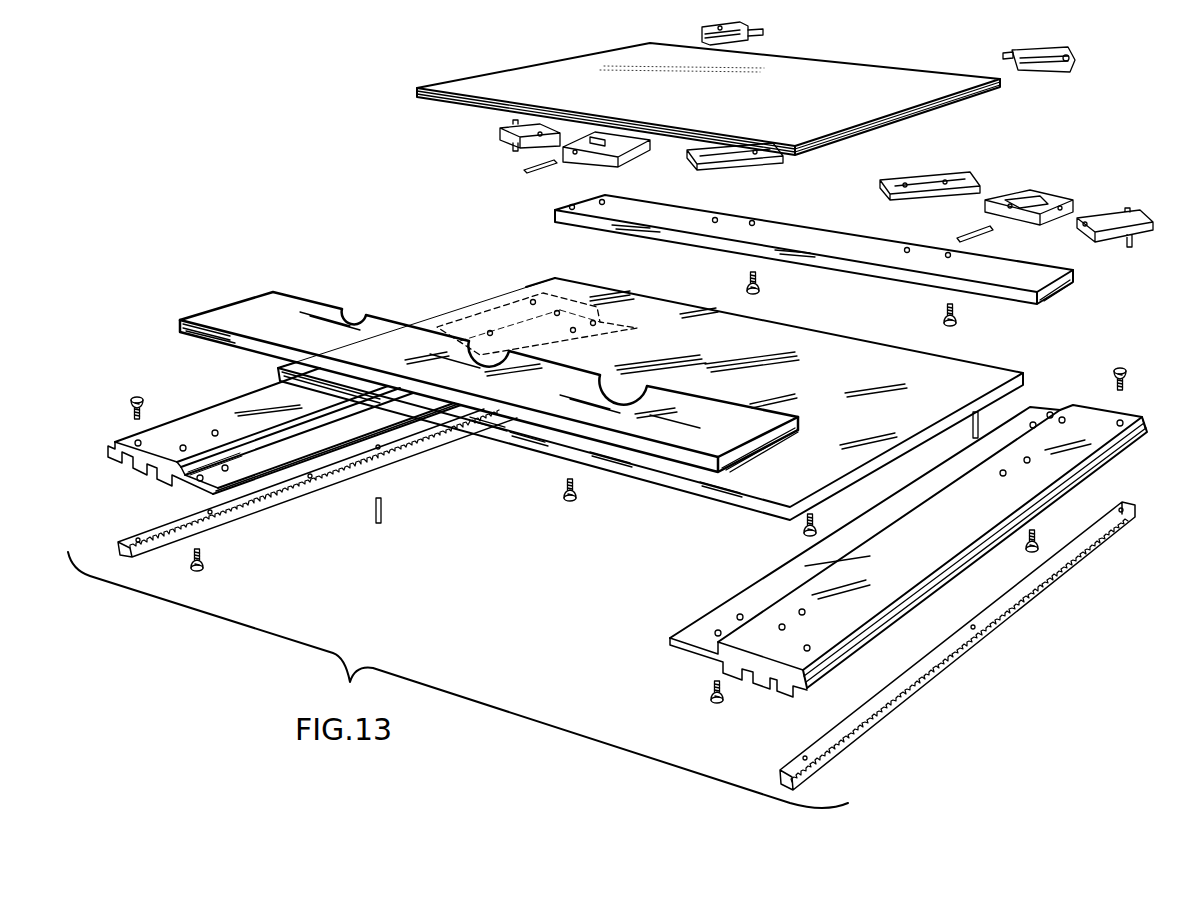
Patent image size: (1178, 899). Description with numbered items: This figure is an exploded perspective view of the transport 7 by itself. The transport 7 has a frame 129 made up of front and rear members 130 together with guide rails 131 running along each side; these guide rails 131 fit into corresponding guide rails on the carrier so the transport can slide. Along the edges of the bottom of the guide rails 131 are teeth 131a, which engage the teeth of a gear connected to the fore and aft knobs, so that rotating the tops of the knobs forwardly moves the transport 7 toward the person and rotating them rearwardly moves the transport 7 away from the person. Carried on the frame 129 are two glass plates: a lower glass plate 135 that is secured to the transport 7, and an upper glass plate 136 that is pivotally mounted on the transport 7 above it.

The transport 7 is at (1078, 114).
The frame 129 is at (1064, 384).
The front and rear members 130 is at (777, 235).
The guide rails 131 is at (200, 427).
The teeth 131a is at (300, 488).
The lower glass plate 135 is at (755, 332).
The upper glass plate 136 is at (803, 67).